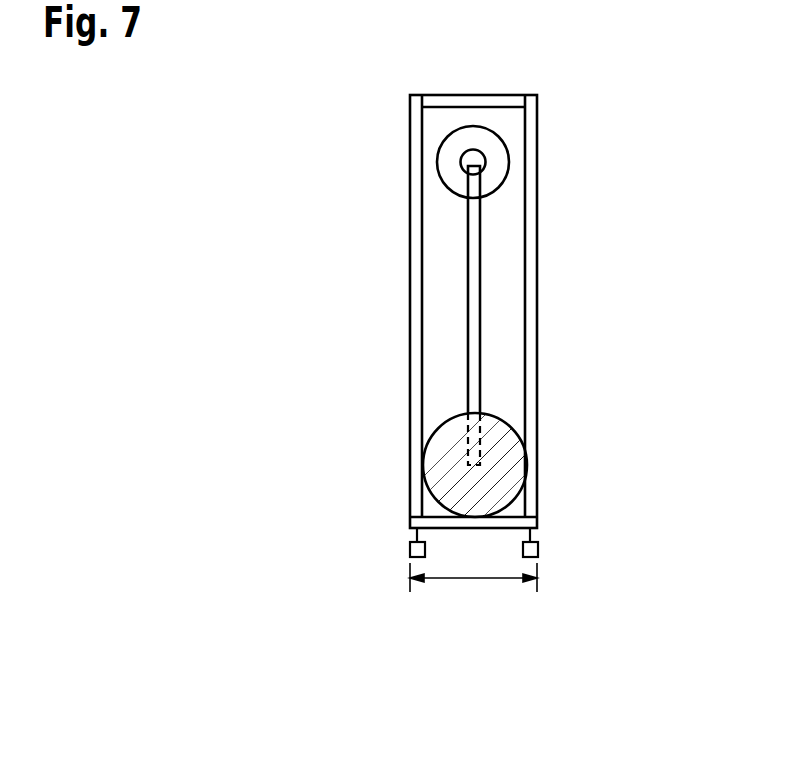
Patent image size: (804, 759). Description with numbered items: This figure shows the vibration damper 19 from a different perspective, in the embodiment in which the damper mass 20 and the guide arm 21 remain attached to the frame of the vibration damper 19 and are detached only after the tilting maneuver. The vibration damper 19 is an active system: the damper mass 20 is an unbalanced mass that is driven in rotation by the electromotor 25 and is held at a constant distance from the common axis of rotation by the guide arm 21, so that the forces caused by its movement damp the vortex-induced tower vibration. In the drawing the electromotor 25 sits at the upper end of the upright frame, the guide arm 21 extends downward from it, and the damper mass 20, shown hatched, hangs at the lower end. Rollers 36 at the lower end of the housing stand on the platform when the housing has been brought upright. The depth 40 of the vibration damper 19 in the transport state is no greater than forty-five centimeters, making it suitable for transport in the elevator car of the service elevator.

The vibration damper 19 is at (569, 107).
The damper mass 20 is at (508, 420).
The guide arm 21 is at (481, 272).
The electromotor 25 is at (506, 152).
The roller 36 is at (410, 550).
The depth 40 is at (475, 579).